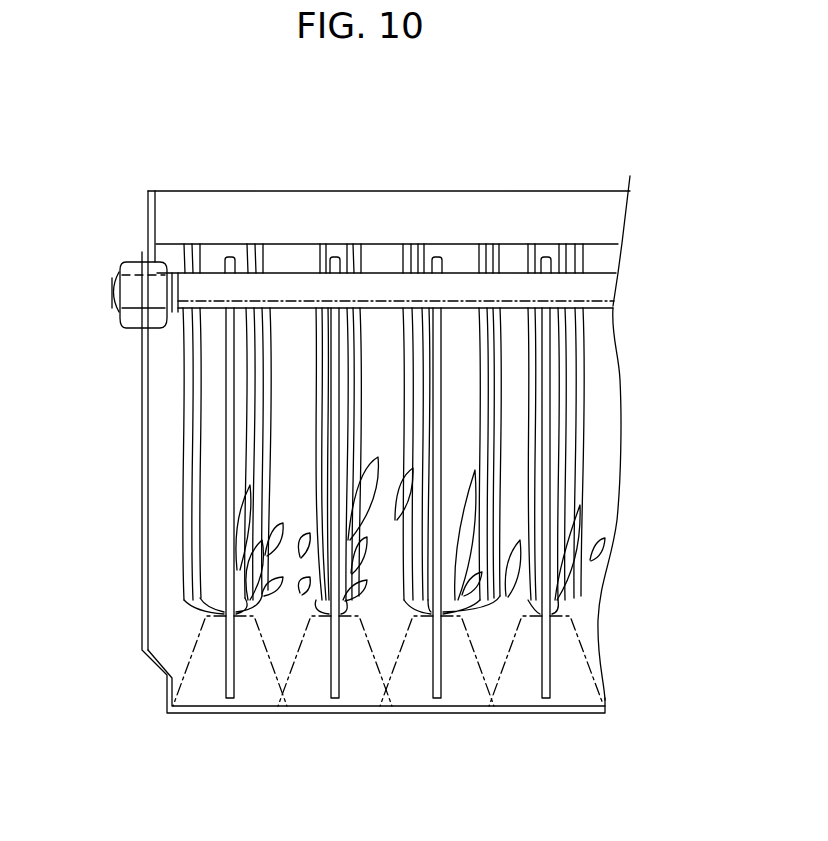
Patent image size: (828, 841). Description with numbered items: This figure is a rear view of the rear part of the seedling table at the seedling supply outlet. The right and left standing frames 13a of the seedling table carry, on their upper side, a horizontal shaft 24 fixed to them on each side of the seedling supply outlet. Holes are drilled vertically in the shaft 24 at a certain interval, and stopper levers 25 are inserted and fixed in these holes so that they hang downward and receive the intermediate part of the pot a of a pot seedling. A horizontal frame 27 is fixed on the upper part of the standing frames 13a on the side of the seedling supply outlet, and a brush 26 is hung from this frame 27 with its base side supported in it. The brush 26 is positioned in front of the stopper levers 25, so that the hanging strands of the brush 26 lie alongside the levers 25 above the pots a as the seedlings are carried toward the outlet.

The standing frame 13a is at (138, 437).
The horizontal shaft 24 is at (622, 283).
The stopper lever 25 is at (573, 390).
The brush 26 is at (588, 418).
The horizontal frame 27 is at (563, 193).
The pot a is at (362, 690).